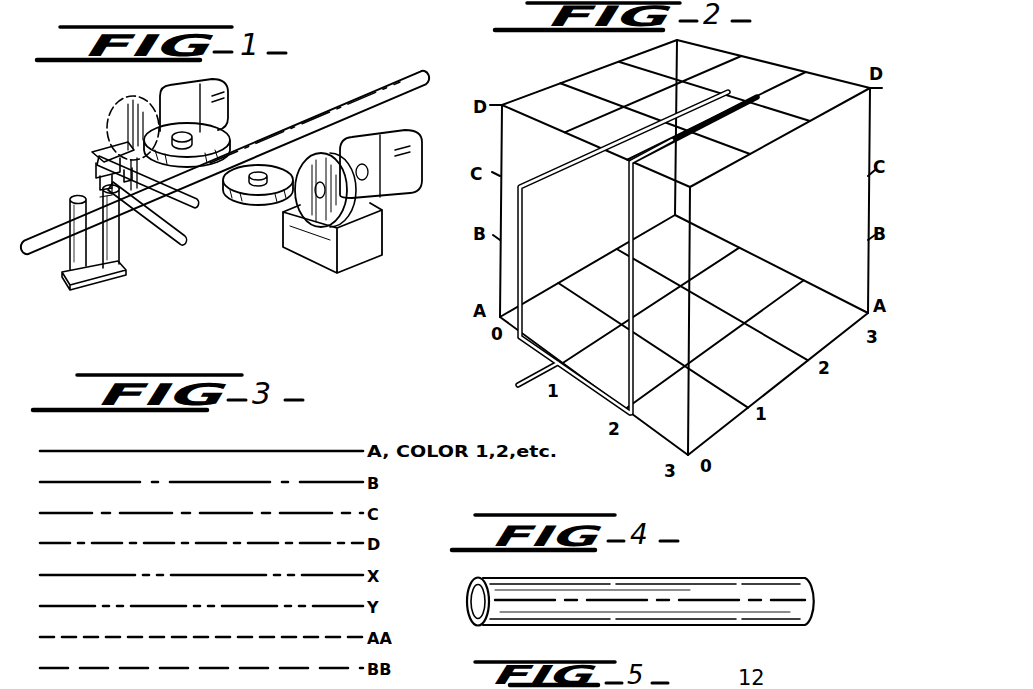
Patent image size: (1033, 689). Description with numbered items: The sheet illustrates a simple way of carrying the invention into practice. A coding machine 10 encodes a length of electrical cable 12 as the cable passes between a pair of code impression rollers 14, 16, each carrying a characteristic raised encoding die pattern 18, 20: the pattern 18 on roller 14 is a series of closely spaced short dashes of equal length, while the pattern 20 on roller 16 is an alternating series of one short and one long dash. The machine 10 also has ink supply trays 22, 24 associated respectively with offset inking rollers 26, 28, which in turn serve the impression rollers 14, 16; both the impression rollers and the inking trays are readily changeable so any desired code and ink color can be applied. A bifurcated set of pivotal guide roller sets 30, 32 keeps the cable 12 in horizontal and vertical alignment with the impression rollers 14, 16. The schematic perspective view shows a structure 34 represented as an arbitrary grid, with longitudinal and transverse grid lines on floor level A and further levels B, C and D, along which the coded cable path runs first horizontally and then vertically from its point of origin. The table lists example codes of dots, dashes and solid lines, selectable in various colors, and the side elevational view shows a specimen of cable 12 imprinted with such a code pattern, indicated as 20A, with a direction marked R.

In FIG. 1, the coding machine 10 is at (138, 158).
In FIG. 1, the electrical cable 12 is at (355, 101).
In FIG. 4, the electrical cable 12 is at (796, 588).
In FIG. 1, the code impression roller 14 is at (232, 127).
In FIG. 1, the code impression roller 16 is at (270, 207).
In FIG. 1, the raised encoding die pattern 18 is at (110, 186).
In FIG. 1, the impression die pattern 20 is at (241, 207).
In FIG. 1, the ink supply tray 22 is at (98, 160).
In FIG. 1, the ink supply tray 24 is at (301, 257).
In FIG. 1, the offset inking roller 26 is at (133, 97).
In FIG. 1, the offset inking roller 28 is at (372, 224).
In FIG. 1, the pivotal guide roller set 30 is at (88, 288).
In FIG. 1, the pivotal guide roller set 32 is at (107, 178).
In FIG. 2, the structure 34 is at (483, 283).
In FIG. 4, the color code marking line 20A is at (660, 597).
In FIG. 4, the rotation direction R is at (633, 626).